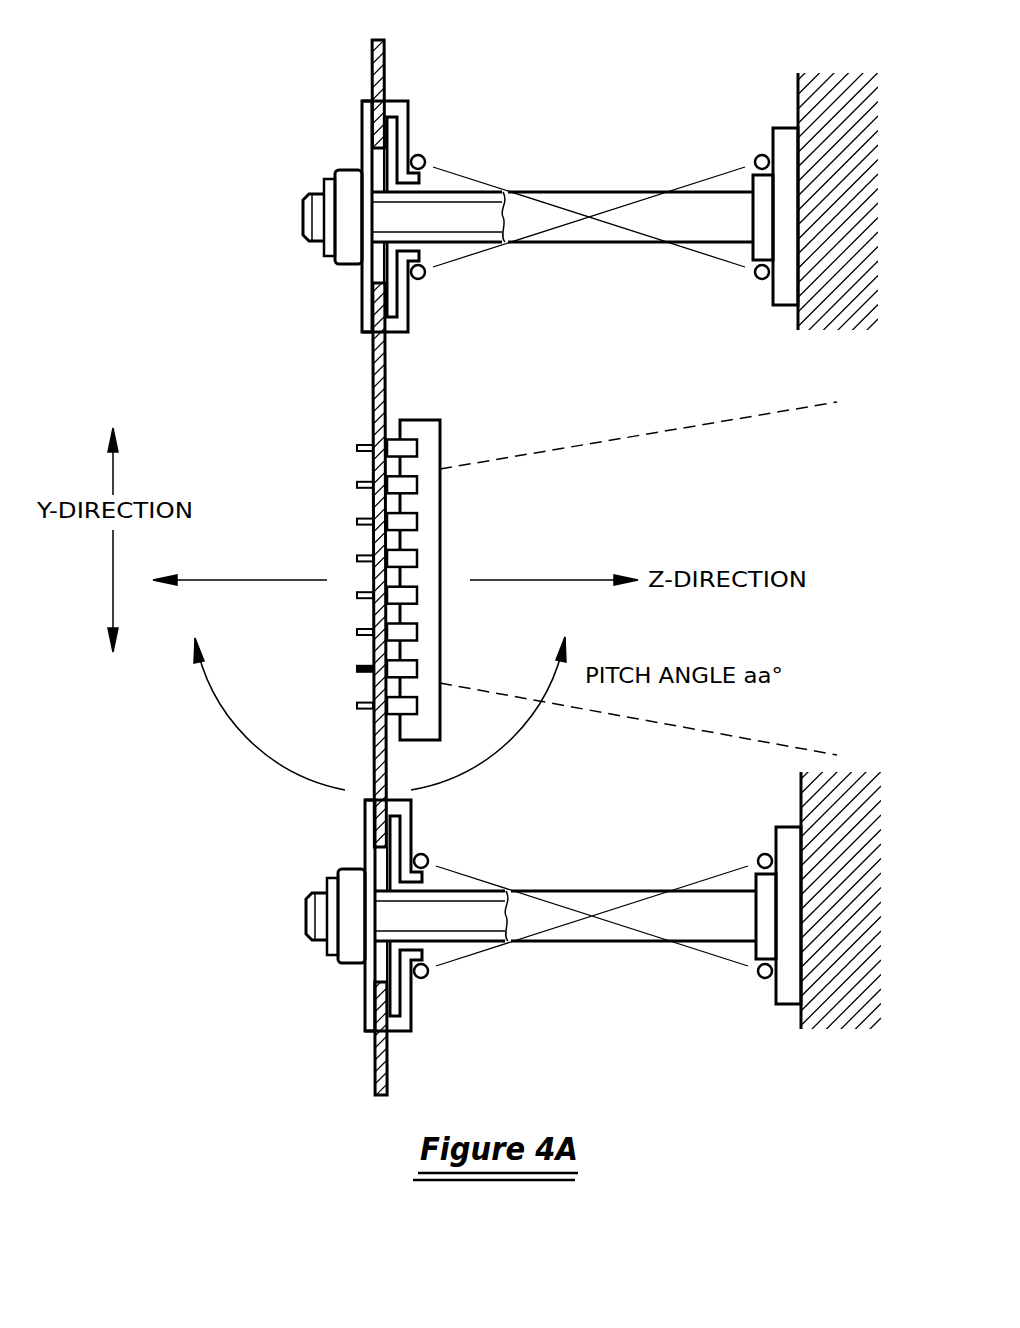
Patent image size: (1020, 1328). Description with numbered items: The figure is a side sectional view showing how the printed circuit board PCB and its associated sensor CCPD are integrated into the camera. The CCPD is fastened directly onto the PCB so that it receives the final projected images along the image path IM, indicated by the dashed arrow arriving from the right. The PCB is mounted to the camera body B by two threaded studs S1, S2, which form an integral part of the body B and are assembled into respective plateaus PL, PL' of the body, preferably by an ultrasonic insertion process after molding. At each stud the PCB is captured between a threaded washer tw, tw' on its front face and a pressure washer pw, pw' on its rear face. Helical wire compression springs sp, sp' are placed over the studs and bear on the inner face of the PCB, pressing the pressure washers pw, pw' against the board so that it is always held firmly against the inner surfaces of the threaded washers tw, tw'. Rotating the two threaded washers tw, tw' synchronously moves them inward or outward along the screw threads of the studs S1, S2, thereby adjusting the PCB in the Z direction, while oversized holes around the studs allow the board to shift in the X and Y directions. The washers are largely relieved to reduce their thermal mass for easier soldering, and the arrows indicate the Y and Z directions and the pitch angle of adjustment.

The printed circuit board PCB is at (384, 58).
The element CCPD is at (440, 503).
The threaded washer tw is at (327, 224).
The pressure washer pw is at (436, 216).
The threaded stud S1 is at (303, 218).
The helical wire compression spring sp is at (589, 247).
The plateau PL is at (745, 193).
The camera body B is at (849, 549).
The threaded washer tw' is at (307, 915).
The pressure washer pw' is at (439, 910).
The threaded stud S2 is at (305, 914).
The helical wire compression spring sp' is at (592, 891).
The plateau PL' is at (734, 929).
The image path IM is at (813, 745).